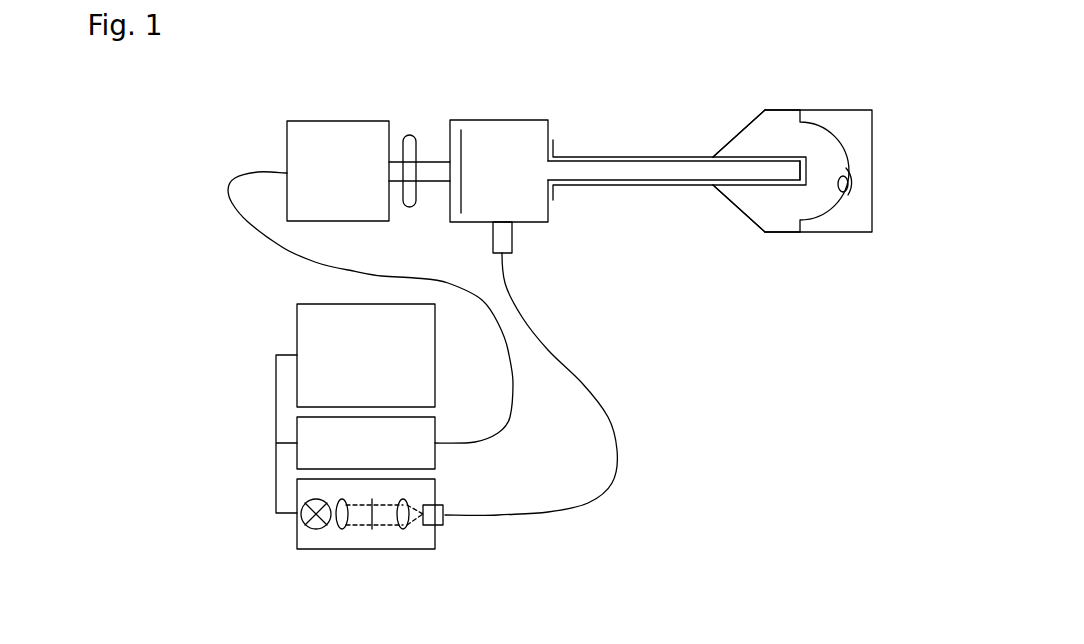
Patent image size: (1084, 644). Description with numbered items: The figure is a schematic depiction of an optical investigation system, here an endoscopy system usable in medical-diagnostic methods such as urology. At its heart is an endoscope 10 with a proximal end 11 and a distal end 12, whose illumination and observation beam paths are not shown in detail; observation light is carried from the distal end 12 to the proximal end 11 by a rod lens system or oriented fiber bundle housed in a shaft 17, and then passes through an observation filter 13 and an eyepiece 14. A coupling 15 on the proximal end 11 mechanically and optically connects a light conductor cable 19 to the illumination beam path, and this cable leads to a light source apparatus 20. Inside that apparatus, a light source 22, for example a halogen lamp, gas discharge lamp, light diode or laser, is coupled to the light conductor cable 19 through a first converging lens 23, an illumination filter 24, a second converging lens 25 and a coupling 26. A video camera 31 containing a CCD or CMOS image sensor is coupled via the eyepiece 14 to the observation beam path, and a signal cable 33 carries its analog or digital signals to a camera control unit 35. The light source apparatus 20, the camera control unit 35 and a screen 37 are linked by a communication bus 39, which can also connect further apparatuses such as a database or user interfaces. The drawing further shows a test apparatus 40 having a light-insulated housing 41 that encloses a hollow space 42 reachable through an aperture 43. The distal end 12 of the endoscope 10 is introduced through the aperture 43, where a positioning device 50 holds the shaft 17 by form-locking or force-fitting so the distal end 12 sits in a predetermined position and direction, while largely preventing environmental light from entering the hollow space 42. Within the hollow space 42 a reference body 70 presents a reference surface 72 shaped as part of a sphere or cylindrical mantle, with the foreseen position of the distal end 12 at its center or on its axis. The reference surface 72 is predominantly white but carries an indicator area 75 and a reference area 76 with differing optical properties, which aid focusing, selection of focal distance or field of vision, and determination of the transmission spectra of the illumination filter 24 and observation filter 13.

The endoscope 10 is at (584, 118).
The proximal end 11 is at (494, 98).
The distal end 12 is at (793, 168).
The observation filter 13 is at (462, 145).
The eyepiece 14 is at (408, 137).
The coupling 15 is at (506, 247).
The shaft 17 is at (652, 172).
The light conductor cable 19 is at (535, 510).
The light source apparatus 20 is at (298, 499).
The light source 22 is at (300, 514).
The first converging lens 23 is at (342, 524).
The illumination filter 24 is at (372, 530).
The second converging lens 25 is at (404, 526).
The coupling 26 is at (443, 517).
The video camera 31 is at (345, 142).
The signal cable 33 is at (267, 236).
The camera control unit 35 is at (298, 457).
The screen 37 is at (307, 345).
The communication bus 39 is at (276, 420).
The test apparatus 40 is at (814, 338).
The light-insulated housing 41 is at (738, 209).
The hollow space 42 is at (775, 123).
The aperture 43 is at (713, 186).
The positioning device 50 is at (662, 157).
The reference body 70 is at (830, 121).
The reference surface 72 is at (800, 218).
The indicator area 75 is at (846, 168).
The reference area 76 is at (843, 182).